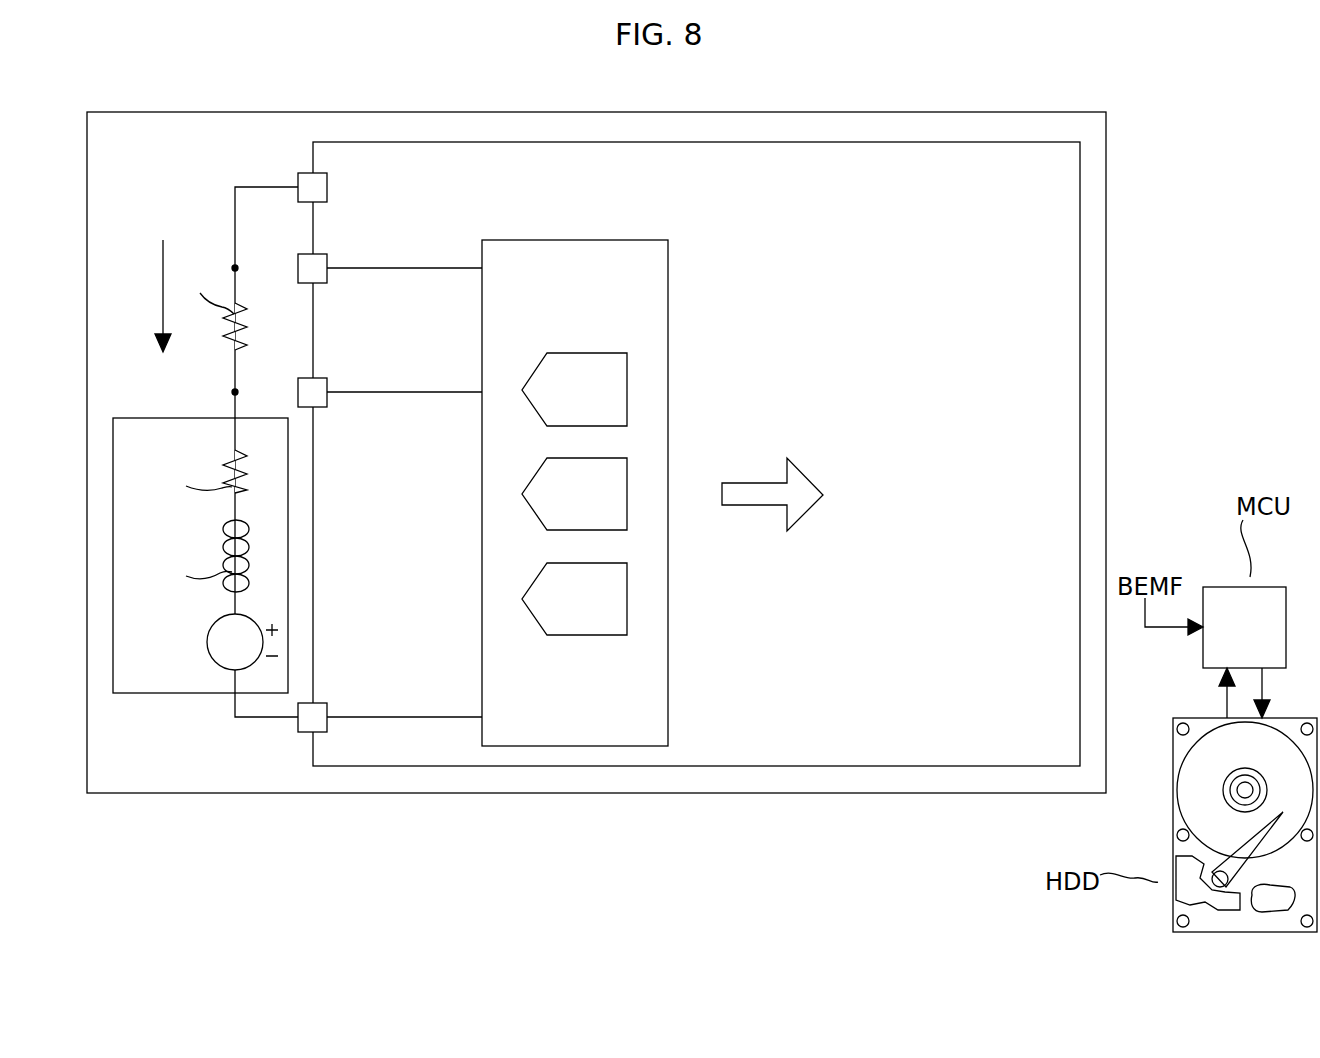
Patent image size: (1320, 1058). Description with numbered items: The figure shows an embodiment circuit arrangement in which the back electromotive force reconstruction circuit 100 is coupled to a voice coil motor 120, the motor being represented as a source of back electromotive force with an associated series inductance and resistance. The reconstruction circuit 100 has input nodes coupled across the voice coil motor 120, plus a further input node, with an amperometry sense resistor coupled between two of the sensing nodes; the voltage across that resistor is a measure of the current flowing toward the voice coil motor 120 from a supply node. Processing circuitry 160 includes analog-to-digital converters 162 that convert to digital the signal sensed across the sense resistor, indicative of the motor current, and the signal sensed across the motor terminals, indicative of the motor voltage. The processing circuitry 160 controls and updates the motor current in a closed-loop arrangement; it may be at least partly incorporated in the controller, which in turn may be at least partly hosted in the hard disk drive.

The BEMF reconstruction circuit 100 is at (349, 130).
The voice coil motor 120 is at (216, 700).
The processing circuitry 160 is at (655, 692).
The analog-to-digital converters 162 is at (598, 316).